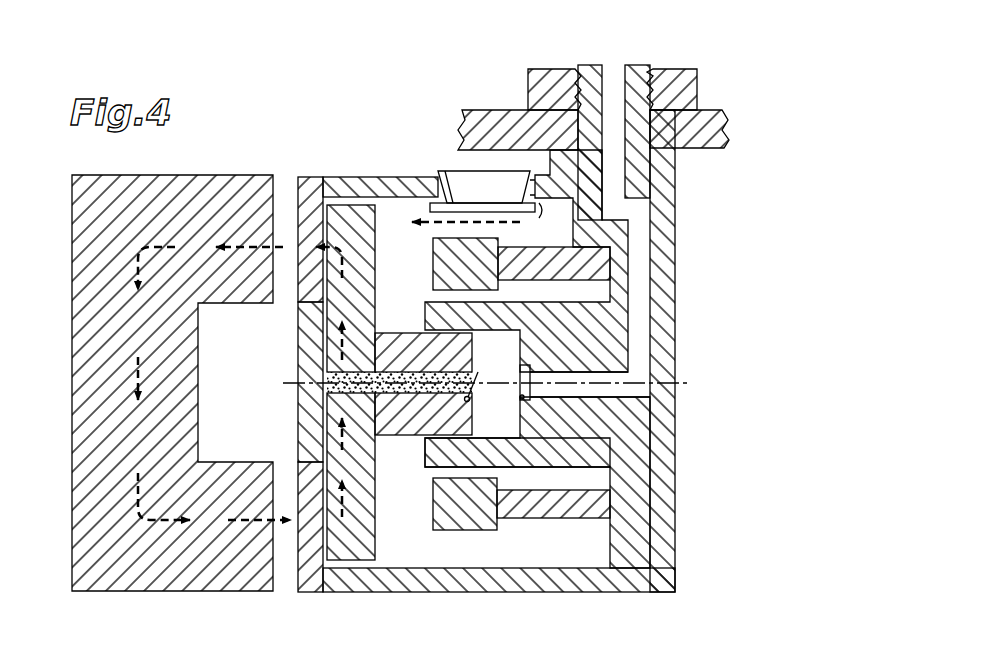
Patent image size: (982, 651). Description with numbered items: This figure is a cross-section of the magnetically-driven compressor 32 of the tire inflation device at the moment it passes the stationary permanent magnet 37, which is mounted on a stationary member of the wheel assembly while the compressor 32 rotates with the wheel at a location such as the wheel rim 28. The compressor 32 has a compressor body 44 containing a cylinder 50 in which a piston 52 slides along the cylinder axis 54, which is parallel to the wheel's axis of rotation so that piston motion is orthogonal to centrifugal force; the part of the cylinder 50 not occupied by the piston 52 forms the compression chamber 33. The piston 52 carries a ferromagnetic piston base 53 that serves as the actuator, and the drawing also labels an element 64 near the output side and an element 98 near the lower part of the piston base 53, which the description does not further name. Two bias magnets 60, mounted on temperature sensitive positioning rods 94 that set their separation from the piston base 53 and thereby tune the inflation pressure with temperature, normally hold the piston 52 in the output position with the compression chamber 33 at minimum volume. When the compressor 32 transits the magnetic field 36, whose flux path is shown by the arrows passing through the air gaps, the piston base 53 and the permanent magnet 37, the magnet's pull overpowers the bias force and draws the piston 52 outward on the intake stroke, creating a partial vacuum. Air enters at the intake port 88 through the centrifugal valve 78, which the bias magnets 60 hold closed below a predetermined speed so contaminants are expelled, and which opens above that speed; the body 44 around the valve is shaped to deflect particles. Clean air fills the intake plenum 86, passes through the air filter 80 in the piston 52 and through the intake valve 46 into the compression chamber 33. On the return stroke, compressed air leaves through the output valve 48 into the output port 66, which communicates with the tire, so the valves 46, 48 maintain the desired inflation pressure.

The wheel rim 28 is at (735, 130).
The compressor 32 is at (681, 547).
The compression chamber 33 is at (498, 423).
The magnetic field 36 is at (137, 368).
The stationary permanent magnet 37 is at (211, 594).
The compressor body 44 is at (661, 482).
The intake valve 46 is at (479, 374).
The output valve 48 is at (535, 371).
The cylinder 50 is at (486, 455).
The piston 52 is at (415, 443).
The piston base 53 is at (343, 224).
The cylinder axis 54 is at (690, 383).
The bias magnets 60 is at (479, 272).
The nut 64 is at (577, 80).
The output port 66 is at (614, 83).
The centrifugal valve 78 is at (455, 178).
The air filter 80 is at (392, 437).
The intake plenum 86 is at (510, 222).
The intake port 88 is at (530, 178).
The temperature sensitive positioning rods 94 is at (600, 265).
The lower plate 98 is at (337, 552).